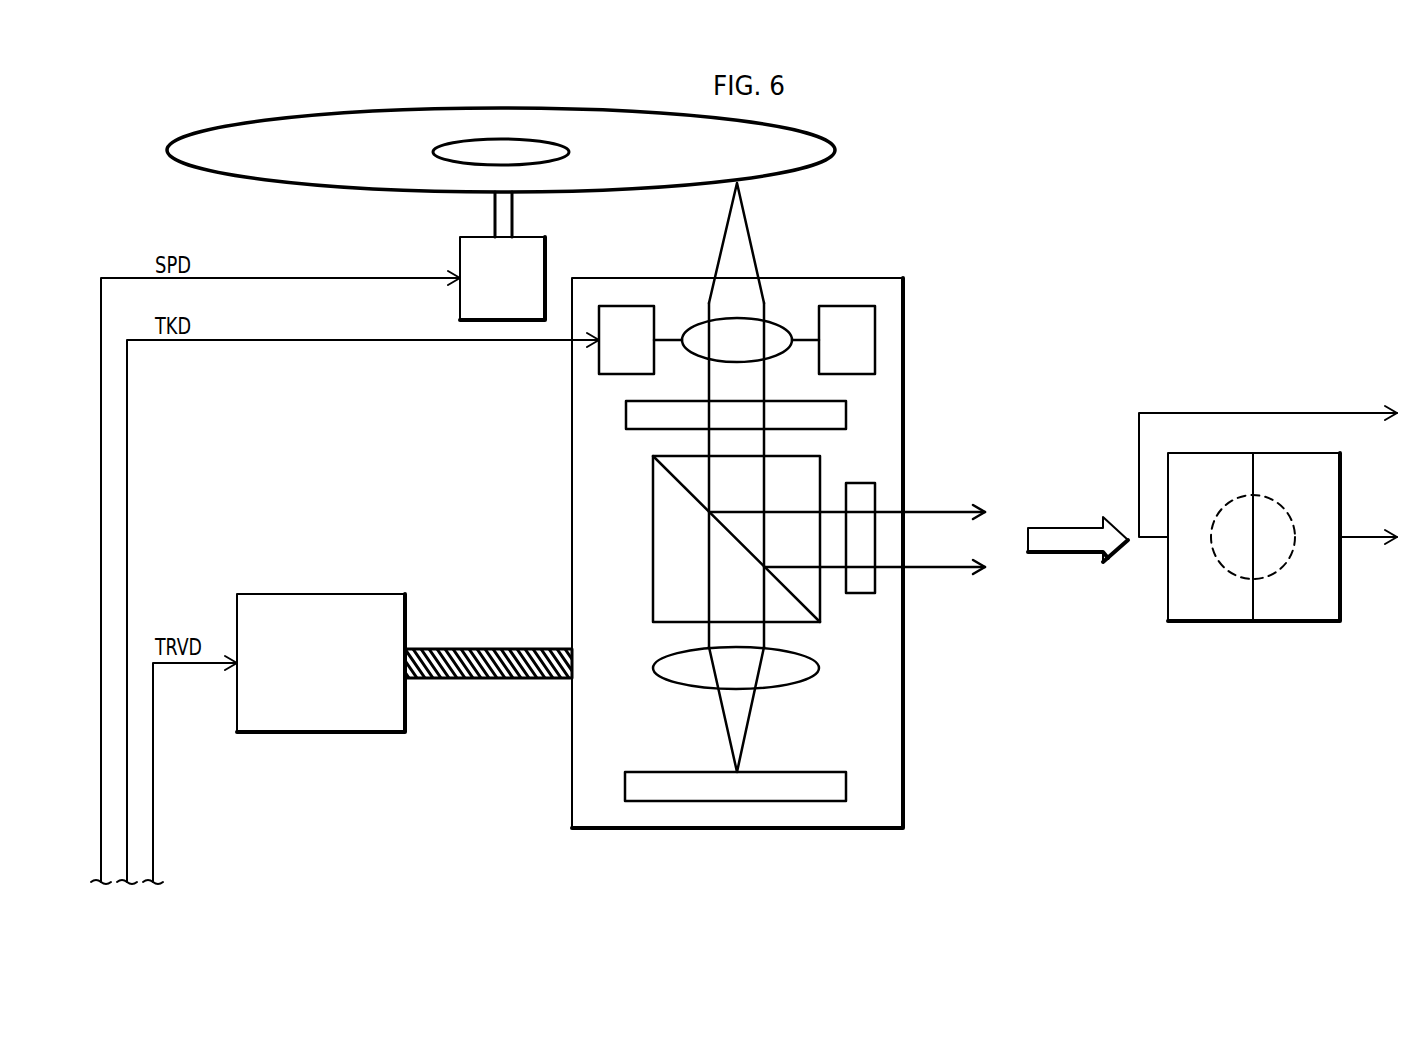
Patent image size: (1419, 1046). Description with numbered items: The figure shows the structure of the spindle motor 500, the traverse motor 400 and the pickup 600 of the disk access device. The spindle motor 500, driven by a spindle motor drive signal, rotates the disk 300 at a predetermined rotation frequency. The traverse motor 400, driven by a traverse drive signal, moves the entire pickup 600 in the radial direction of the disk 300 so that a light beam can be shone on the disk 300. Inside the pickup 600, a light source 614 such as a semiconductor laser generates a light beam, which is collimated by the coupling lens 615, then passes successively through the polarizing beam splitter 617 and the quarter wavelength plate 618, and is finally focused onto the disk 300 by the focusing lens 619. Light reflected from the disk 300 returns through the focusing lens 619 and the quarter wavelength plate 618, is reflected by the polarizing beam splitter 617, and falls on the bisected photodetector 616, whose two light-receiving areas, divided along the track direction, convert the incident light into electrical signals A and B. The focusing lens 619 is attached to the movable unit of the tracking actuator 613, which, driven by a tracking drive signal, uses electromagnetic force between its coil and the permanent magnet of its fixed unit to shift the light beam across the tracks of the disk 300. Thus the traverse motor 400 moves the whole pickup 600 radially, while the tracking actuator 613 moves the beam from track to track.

The disk 300 is at (822, 137).
The spindle motor 500 is at (460, 242).
The traverse motor 400 is at (293, 732).
The pickup 600 is at (903, 278).
The tracking actuator 613 is at (599, 374).
The focusing lens 619 is at (779, 324).
The 1/4 wavelength plate 618 is at (846, 401).
The polarizing beam splitter 617 is at (653, 481).
The coupling lens 615 is at (653, 672).
The light source 614 is at (846, 772).
The bisected photodetector 616 is at (861, 593).